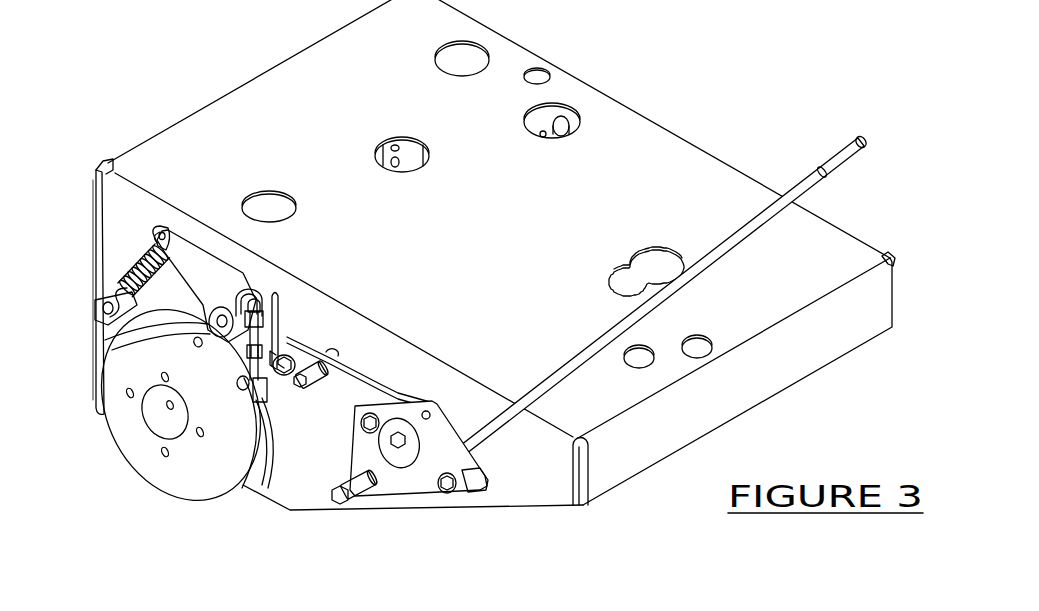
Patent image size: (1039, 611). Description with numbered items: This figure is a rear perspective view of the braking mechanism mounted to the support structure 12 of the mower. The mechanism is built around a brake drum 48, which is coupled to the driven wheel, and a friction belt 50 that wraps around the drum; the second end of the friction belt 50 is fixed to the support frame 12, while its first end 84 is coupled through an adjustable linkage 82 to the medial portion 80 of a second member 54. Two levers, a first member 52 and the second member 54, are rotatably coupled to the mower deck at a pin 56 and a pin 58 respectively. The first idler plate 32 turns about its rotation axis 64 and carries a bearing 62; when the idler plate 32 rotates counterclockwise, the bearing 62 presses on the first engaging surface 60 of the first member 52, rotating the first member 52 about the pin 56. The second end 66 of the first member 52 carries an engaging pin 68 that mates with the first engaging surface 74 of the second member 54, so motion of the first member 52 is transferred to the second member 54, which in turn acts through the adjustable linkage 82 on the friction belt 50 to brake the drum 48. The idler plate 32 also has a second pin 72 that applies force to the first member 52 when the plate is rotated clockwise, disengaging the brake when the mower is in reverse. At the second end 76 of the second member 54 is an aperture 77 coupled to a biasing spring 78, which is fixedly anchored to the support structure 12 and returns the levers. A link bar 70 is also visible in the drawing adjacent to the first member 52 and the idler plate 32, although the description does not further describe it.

The support structure 12 is at (274, 97).
The first idler plate 32 is at (398, 492).
The brake drum 48 is at (173, 483).
The friction belt 50 is at (253, 482).
The first member 52 is at (336, 394).
The second member 54 is at (192, 253).
The pin 56 is at (286, 375).
The pin 58 is at (213, 332).
The first engaging surface 60 is at (468, 493).
The bearing 62 is at (448, 490).
The rotation axis 64 is at (396, 448).
The second end 66 is at (335, 357).
The engaging pin 68 is at (286, 353).
The link bar 70 is at (340, 354).
The second pin 72 is at (370, 433).
The first engaging surface 74 is at (252, 402).
The second end 76 is at (158, 248).
The aperture 77 is at (165, 242).
The biasing spring 78 is at (127, 277).
The medial portion 80 is at (237, 330).
The adjustable linkage 82 is at (266, 312).
The first end 84 is at (247, 390).